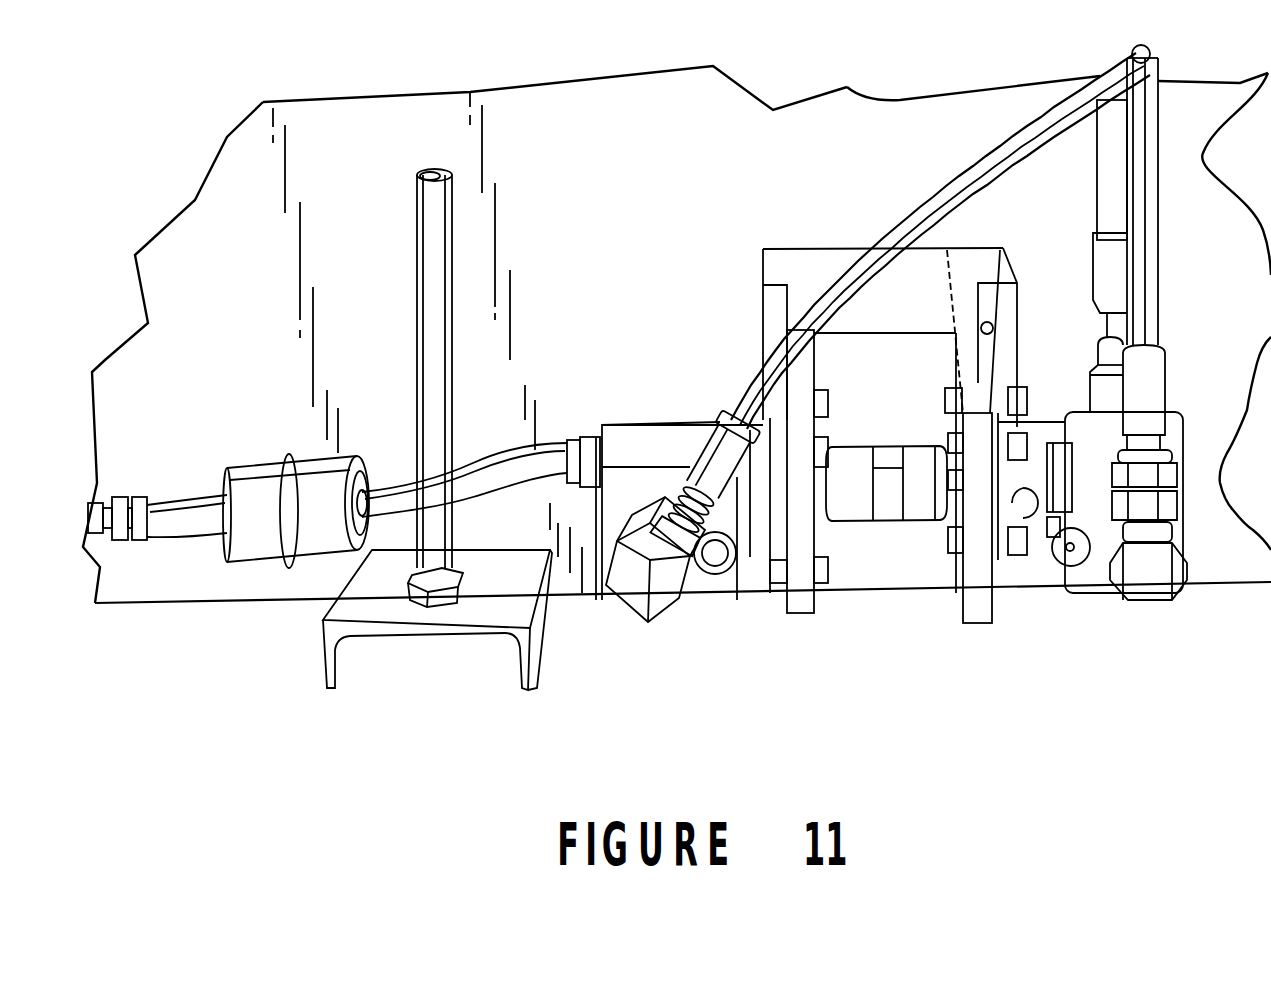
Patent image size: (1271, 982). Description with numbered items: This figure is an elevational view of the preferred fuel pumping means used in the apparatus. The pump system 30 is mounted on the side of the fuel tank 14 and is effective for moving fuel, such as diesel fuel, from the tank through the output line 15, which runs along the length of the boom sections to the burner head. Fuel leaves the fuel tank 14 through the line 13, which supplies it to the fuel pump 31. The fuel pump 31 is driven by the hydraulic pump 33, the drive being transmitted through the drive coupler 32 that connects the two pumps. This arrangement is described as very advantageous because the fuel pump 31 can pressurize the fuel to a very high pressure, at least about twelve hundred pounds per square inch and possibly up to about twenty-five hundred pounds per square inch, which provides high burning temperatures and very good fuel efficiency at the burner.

The line 13 is at (177, 520).
The fuel tank 14 is at (633, 238).
The output line 15 is at (1023, 137).
The pump system 30 is at (650, 637).
The fuel pump 31 is at (698, 580).
The drive coupler 32 is at (893, 507).
The hydraulic pump 33 is at (1100, 580).